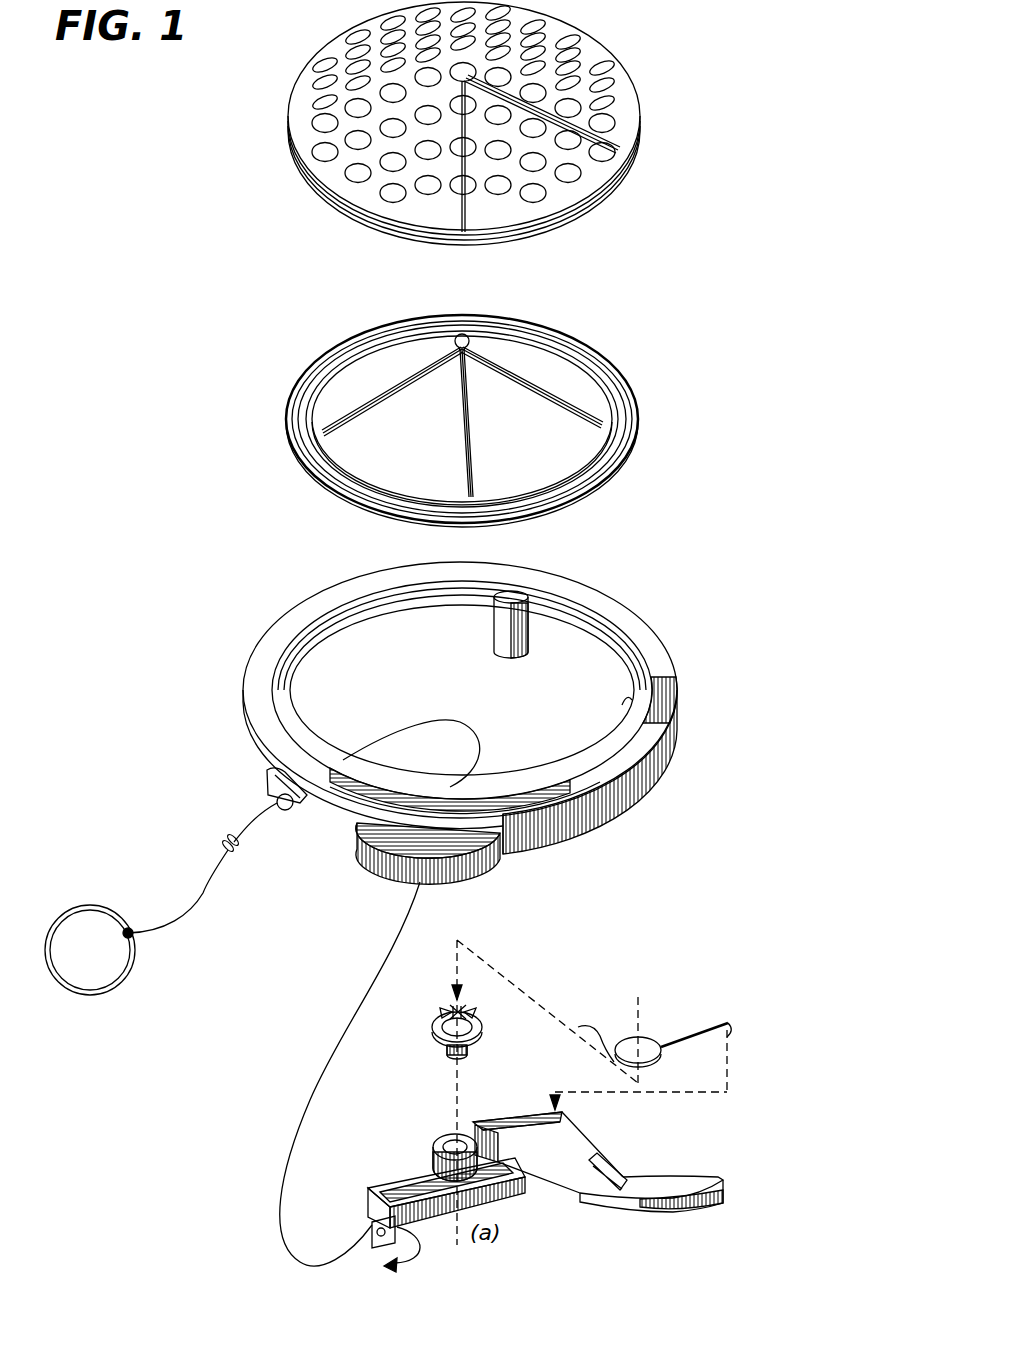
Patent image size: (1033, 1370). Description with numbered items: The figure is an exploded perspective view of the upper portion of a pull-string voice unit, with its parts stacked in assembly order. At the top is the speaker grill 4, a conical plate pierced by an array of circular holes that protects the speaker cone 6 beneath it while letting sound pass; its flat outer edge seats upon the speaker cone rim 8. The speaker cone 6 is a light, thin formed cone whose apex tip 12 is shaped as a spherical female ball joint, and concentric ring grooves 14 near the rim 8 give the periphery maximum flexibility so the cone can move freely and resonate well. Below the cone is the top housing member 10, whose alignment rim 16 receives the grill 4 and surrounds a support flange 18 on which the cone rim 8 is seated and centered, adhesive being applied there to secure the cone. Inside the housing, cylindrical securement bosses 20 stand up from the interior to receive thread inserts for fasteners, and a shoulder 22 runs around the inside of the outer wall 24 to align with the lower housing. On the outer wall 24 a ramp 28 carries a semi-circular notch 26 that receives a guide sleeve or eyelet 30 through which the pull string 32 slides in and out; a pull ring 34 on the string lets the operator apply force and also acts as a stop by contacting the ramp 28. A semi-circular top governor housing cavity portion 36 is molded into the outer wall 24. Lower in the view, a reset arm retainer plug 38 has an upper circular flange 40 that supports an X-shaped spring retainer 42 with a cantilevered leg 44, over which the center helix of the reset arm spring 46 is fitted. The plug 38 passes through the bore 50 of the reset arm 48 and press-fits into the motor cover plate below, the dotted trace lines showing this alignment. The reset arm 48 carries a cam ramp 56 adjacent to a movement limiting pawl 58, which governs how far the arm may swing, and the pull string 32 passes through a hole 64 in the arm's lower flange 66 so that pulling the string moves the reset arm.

The speaker grill 4 is at (621, 59).
The speaker cone 6 is at (481, 397).
The speaker cone rim 8 is at (630, 433).
The top housing member 10 is at (471, 717).
The apex tip 12 is at (466, 335).
The concentric ring grooves 14 is at (594, 380).
The alignment rim 16 is at (620, 630).
The support flange 18 is at (597, 618).
The securement bosses 20 is at (493, 637).
The shoulder 22 is at (385, 618).
The outer wall 24 is at (678, 740).
The semi-circular notch 26 is at (292, 810).
The ramp 28 is at (263, 777).
The guide sleeve or eyelet 30 is at (226, 838).
The pull string 32 is at (200, 892).
The pull ring 34 is at (92, 997).
The top governor housing cavity portion 36 is at (458, 880).
The reset arm retainer plug 38 is at (439, 996).
The upper circular flange 40 is at (447, 1013).
The spring retainer 42 is at (471, 1000).
The cantilevered leg 44 is at (482, 1028).
The reset arm spring 46 is at (730, 1022).
The reset arm 48 is at (552, 1167).
The bore 50 is at (453, 1140).
The cam ramp 56 is at (618, 1178).
The movement limiting pawl 58 is at (723, 1206).
The hole 64 is at (367, 1213).
The lower flange 66 is at (370, 1230).